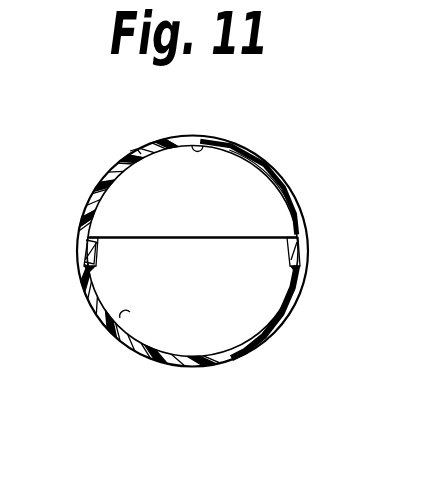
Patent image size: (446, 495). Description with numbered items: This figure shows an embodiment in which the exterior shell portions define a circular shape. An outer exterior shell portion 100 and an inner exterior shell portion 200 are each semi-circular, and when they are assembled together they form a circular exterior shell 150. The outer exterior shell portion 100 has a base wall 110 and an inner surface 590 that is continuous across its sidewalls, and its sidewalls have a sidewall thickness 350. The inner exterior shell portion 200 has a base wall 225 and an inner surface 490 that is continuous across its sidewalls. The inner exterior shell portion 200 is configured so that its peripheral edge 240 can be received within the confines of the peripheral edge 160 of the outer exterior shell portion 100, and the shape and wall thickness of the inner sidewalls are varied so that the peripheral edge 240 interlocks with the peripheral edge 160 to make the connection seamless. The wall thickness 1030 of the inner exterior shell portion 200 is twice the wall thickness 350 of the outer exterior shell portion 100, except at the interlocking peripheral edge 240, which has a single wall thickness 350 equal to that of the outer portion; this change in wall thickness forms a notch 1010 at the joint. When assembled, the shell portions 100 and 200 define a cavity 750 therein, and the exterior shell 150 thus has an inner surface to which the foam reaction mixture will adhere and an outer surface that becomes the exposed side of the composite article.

The outer exterior shell portion 100 is at (287, 176).
The base wall 110 is at (105, 171).
The exterior shell 150 is at (302, 299).
The peripheral edge 160 is at (72, 232).
The inner exterior shell portion 200 is at (157, 374).
The base wall 225 is at (263, 343).
The peripheral edge 240 is at (172, 240).
The sidewall thickness 350 is at (133, 153).
The inner surface 490 is at (109, 323).
The inner surface 590 is at (207, 143).
The cavity 750 is at (149, 324).
The notch 1010 is at (94, 268).
The wall thickness 1030 is at (206, 358).